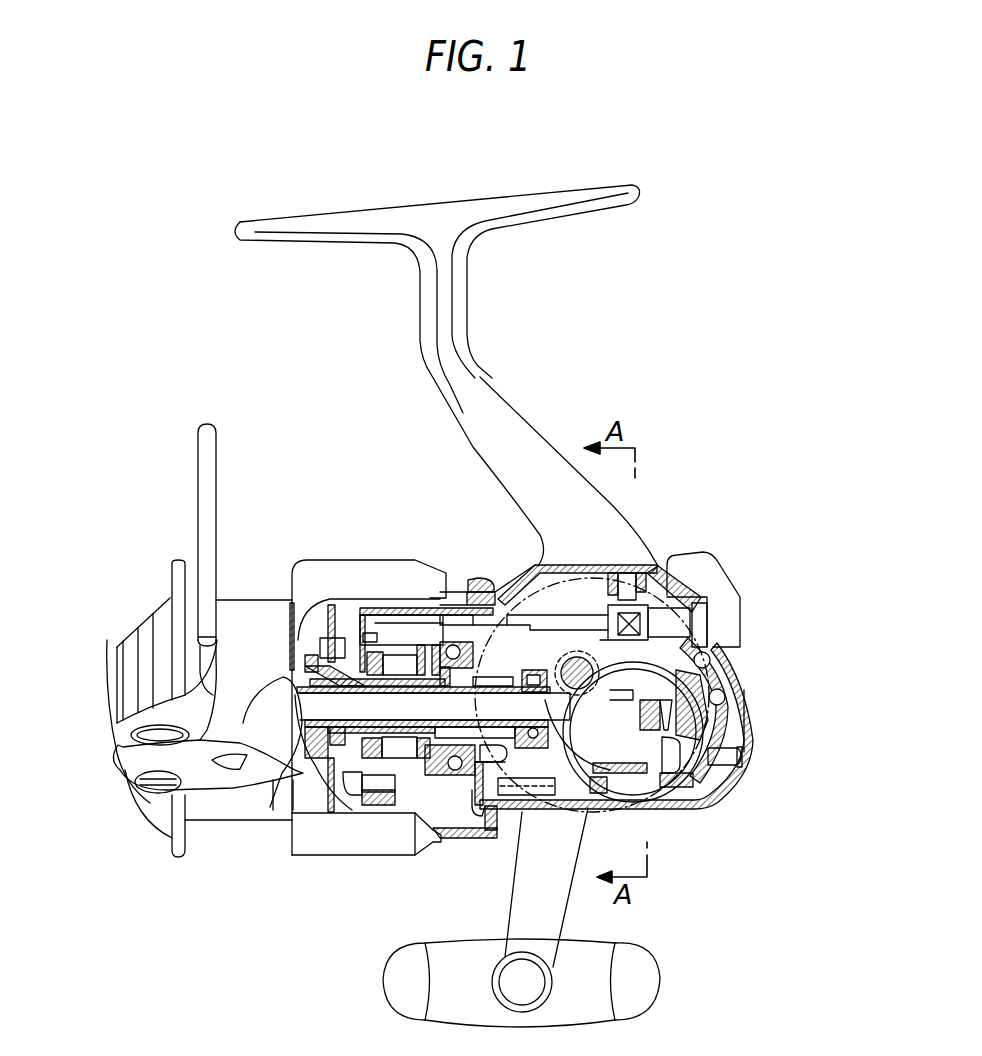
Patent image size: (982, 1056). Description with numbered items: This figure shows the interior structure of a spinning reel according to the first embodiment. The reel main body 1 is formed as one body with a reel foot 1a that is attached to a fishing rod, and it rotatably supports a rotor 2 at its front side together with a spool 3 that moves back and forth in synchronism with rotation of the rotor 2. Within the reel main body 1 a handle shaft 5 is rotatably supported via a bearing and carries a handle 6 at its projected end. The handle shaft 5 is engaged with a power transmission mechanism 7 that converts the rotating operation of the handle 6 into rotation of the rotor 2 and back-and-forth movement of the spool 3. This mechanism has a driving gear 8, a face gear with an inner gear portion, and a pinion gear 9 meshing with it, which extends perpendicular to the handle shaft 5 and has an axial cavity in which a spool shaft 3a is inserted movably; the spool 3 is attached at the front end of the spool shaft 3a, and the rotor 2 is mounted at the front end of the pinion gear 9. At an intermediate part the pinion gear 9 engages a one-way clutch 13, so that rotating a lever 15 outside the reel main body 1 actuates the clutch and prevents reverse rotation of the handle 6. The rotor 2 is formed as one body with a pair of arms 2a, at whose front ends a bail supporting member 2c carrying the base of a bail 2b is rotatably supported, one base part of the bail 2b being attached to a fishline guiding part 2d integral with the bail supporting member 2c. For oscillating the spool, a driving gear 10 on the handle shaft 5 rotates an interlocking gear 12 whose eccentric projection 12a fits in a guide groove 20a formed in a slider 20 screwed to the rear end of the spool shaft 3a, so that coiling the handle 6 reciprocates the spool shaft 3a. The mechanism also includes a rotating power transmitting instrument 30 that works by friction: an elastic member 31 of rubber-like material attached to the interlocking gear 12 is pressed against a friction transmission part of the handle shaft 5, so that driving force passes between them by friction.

The reel main body 1 is at (454, 375).
The reel foot 1a is at (490, 380).
The rotor 2 is at (480, 578).
The arms 2a is at (288, 728).
The bail 2b is at (212, 440).
The bail supporting member 2c is at (213, 783).
The fishline guiding part 2d is at (118, 650).
The spool 3 is at (335, 562).
The spool shaft 3a is at (333, 715).
The handle shaft 5 is at (683, 572).
The handle 6 is at (648, 975).
The power transmission mechanism 7 is at (509, 770).
The driving gear 8 is at (545, 560).
The pinion gear 9 is at (452, 760).
The driving gear 10 is at (700, 620).
The interlocking gear 12 is at (725, 660).
The eccentric projection 12a is at (762, 750).
The one-way clutch 13 is at (397, 663).
The lever 15 is at (712, 562).
The slider 20 is at (670, 803).
The guide groove 20a is at (754, 705).
The rotating power transmitting instrument 30 is at (582, 790).
The elastic member 31 is at (716, 778).